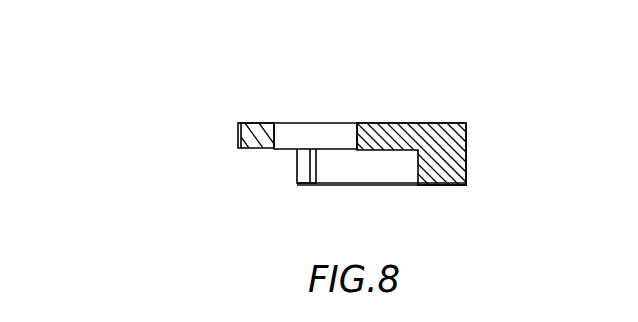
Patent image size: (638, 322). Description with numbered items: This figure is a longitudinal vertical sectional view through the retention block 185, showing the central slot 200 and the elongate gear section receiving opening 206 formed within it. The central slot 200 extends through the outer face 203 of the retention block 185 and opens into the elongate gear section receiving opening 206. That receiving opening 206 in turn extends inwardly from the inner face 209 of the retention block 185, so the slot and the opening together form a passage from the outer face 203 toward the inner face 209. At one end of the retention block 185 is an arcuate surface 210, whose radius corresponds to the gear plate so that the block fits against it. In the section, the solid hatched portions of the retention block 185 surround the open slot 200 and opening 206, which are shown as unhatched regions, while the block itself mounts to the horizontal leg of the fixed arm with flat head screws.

The retention block 185 is at (472, 97).
The central slot 200 is at (357, 128).
The outer face 203 is at (435, 123).
The elongate gear section receiving opening 206 is at (276, 165).
The inner face 209 is at (442, 185).
The arcuate surface 210 is at (238, 133).